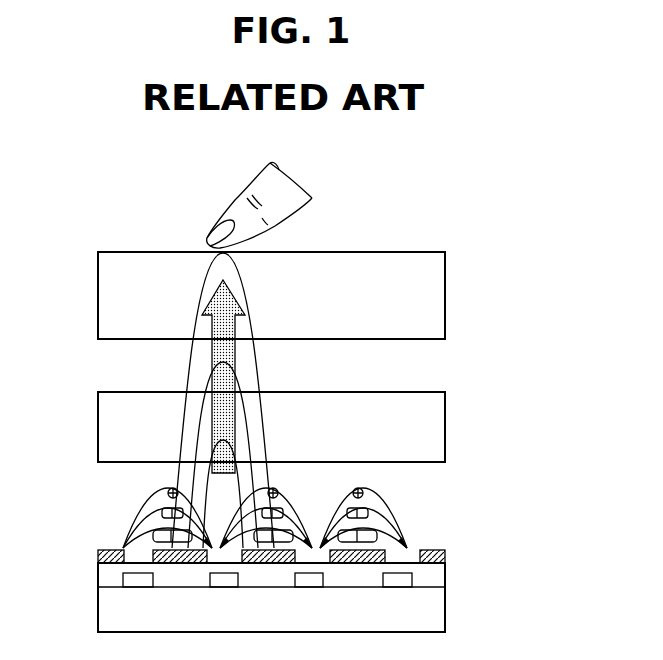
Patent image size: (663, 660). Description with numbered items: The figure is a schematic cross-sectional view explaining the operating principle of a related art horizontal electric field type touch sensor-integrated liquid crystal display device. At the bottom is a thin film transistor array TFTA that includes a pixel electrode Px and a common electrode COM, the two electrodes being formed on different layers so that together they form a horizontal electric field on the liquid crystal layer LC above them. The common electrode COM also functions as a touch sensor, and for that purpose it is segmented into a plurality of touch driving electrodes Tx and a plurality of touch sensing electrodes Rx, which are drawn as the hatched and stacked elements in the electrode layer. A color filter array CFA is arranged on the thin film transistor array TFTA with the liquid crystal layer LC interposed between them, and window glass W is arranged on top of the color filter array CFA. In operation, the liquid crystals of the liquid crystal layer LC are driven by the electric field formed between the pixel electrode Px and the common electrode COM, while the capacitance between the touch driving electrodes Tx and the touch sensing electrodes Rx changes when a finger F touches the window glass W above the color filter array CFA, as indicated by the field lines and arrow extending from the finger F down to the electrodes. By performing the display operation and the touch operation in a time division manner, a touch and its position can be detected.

The finger F is at (263, 190).
The window glass W is at (436, 297).
The color filter array CFA is at (455, 423).
The liquid crystal layer LC is at (269, 520).
The touch driving electrodes Tx is at (145, 553).
The touch sensing electrodes Rx is at (98, 556).
The common electrode COM is at (286, 554).
The pixel electrode Px is at (128, 577).
The thin film transistor array TFTA is at (294, 597).